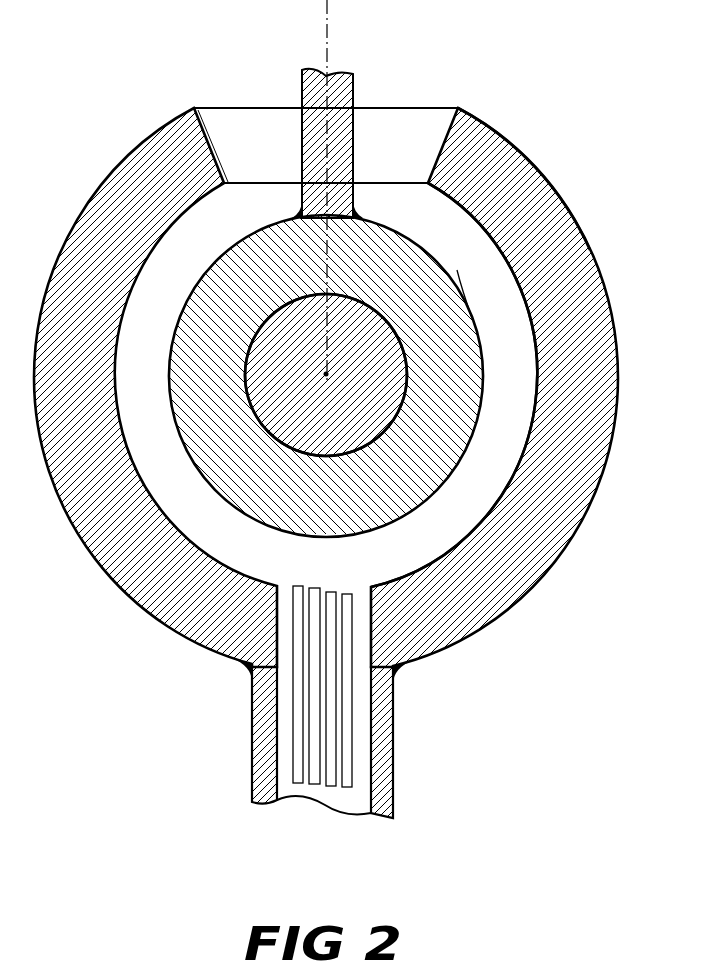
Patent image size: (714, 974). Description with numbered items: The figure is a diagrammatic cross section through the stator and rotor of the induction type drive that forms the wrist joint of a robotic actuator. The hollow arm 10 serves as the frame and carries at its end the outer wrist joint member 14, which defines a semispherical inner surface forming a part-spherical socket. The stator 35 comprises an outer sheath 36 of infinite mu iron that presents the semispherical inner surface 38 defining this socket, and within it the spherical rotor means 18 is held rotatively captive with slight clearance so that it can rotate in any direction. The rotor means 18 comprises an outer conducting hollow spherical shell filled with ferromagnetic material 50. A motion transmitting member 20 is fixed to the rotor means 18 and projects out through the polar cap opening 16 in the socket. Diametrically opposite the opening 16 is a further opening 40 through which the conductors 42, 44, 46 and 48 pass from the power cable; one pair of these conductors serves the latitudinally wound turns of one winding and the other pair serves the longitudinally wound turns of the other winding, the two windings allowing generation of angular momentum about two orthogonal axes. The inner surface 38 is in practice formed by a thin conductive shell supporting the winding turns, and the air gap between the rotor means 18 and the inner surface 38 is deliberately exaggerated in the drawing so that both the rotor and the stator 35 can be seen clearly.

The arm 10 is at (340, 426).
The outer wrist joint member 14 is at (340, 464).
The polar cap opening 16 is at (380, 162).
The spherical rotor means 18 is at (377, 221).
The motion transmitting member 20 is at (304, 88).
The stator 35 is at (569, 211).
The outer sheath 36 is at (580, 288).
The semispherical inner surface 38 is at (524, 455).
The further opening 40 is at (324, 698).
The conductor 42 is at (298, 585).
The conductor 44 is at (316, 588).
The conductor 46 is at (331, 592).
The conductor 48 is at (349, 594).
The ferromagnetic material 50 is at (286, 420).